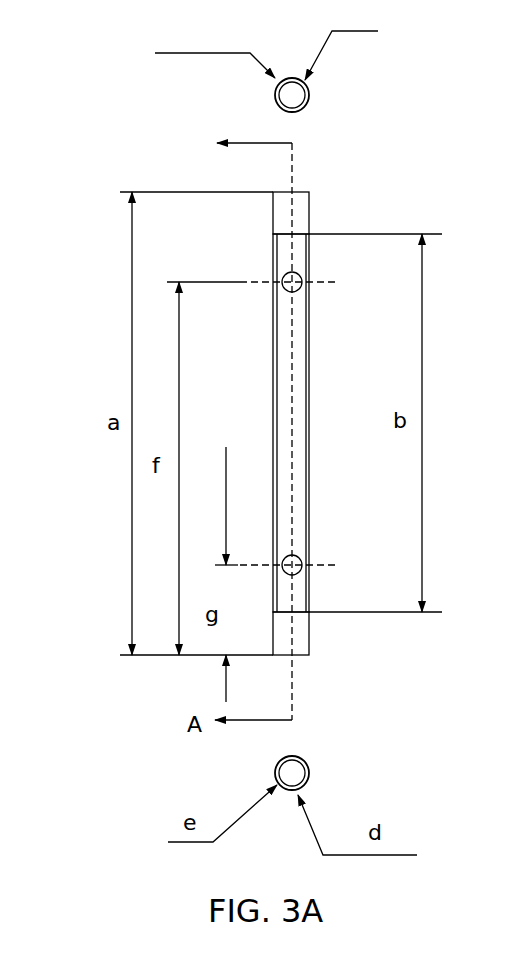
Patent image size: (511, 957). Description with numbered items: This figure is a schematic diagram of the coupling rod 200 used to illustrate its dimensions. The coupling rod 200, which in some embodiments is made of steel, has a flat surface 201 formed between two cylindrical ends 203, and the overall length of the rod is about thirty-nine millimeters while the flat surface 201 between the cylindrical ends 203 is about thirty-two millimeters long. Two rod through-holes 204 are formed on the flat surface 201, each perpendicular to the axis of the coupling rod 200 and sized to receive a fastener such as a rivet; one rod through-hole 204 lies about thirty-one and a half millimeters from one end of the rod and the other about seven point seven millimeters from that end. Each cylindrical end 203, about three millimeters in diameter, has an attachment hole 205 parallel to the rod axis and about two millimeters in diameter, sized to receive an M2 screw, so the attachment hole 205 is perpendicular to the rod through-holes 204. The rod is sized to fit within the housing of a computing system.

The coupling rod 200 is at (102, 38).
The flat surface 201 is at (298, 443).
The cylindrical ends 203 is at (301, 208).
The rod through-hole 204 is at (300, 286).
The attachment hole 205 is at (296, 97).